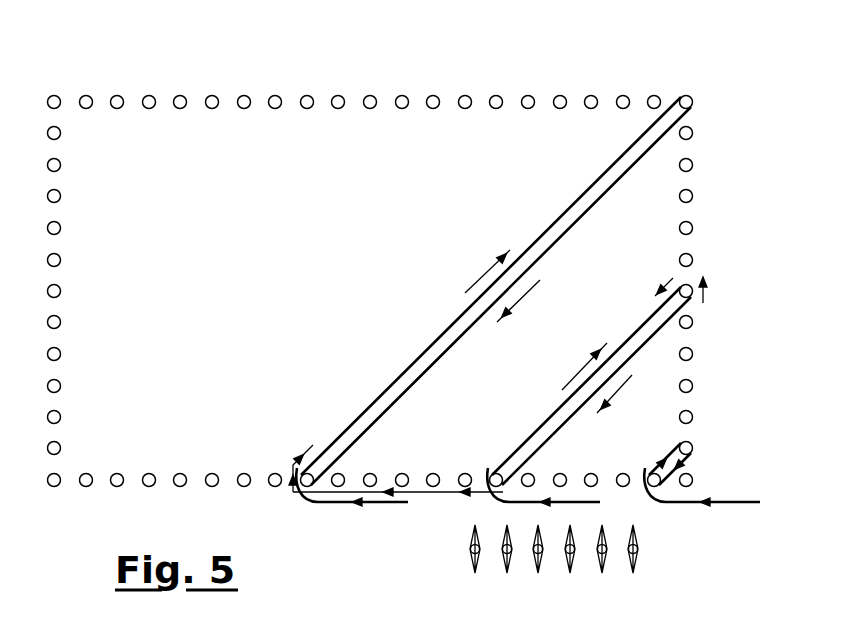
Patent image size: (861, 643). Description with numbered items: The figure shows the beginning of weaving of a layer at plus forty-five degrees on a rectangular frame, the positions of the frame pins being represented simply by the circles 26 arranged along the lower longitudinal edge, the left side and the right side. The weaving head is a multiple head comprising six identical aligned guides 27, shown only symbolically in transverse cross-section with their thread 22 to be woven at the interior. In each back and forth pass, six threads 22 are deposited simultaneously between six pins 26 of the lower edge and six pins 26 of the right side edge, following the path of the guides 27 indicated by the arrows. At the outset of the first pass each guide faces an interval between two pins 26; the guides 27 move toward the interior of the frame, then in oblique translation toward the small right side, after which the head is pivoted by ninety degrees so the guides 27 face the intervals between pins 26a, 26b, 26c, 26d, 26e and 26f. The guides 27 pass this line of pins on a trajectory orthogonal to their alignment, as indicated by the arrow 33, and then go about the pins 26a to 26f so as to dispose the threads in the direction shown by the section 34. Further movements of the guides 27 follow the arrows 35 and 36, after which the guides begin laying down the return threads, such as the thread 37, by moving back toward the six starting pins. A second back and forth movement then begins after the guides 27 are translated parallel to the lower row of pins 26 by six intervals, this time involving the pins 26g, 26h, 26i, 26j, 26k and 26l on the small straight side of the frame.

The thread 22 is at (572, 568).
The pins 26 is at (559, 95).
The pin 26a is at (692, 286).
The pin 26b is at (694, 322).
The pin 26c is at (694, 354).
The pin 26d is at (694, 386).
The pin 26e is at (694, 417).
The pin 26f is at (694, 448).
The pin 26g is at (686, 95).
The pin 26h is at (692, 129).
The pin 26i is at (692, 159).
The pin 26j is at (692, 191).
The pin 26k is at (692, 223).
The pin 26l is at (692, 254).
The guides 27 is at (503, 568).
The arrow 33 is at (680, 284).
The section 34 is at (636, 327).
The arrow 35 is at (706, 287).
The arrow 36 is at (634, 390).
The return thread 37 is at (570, 426).